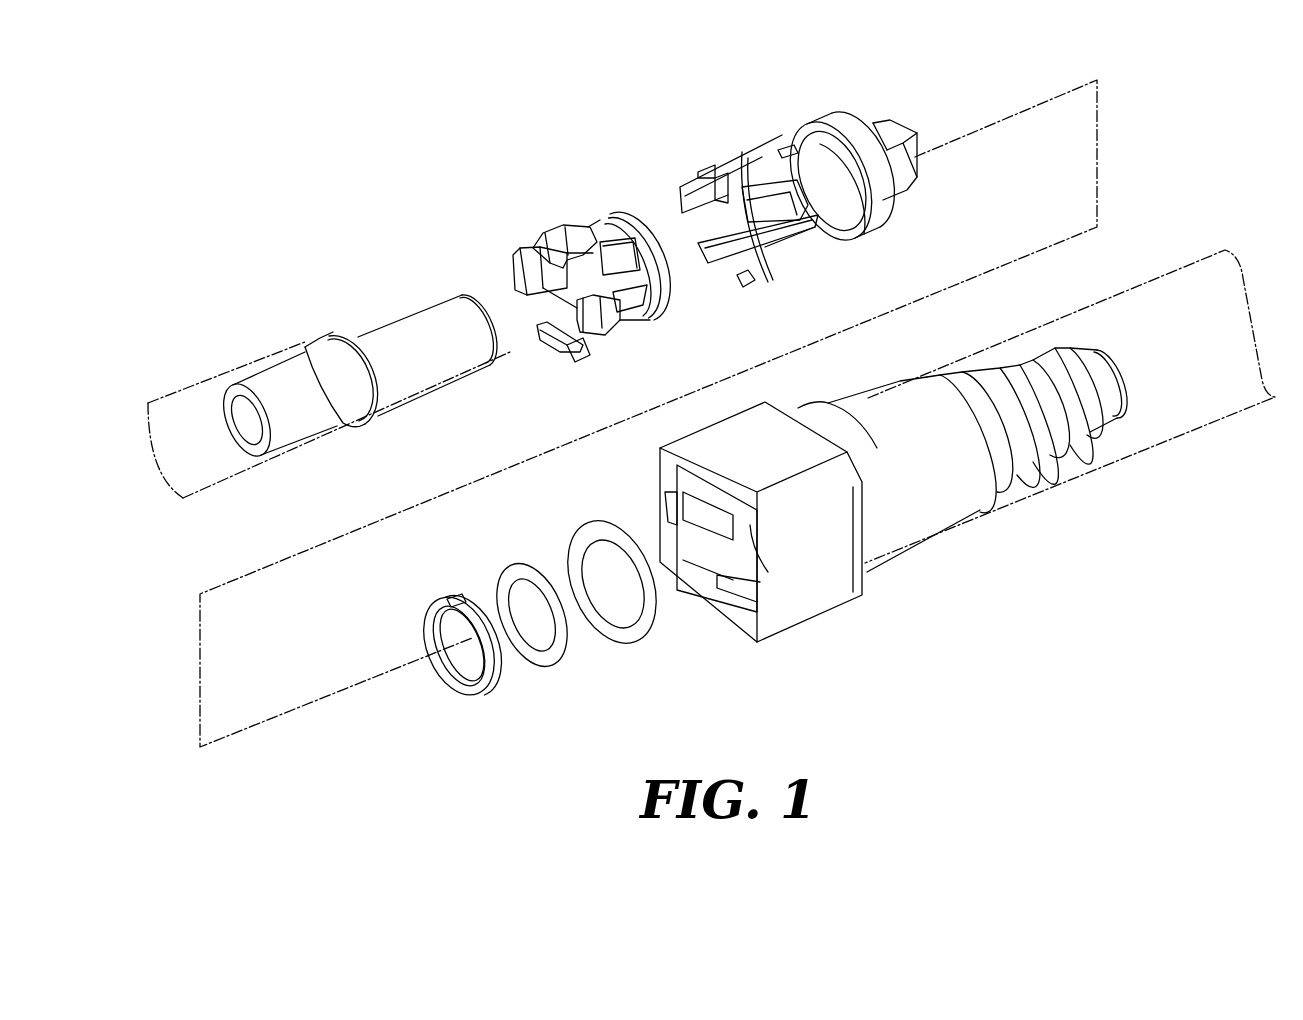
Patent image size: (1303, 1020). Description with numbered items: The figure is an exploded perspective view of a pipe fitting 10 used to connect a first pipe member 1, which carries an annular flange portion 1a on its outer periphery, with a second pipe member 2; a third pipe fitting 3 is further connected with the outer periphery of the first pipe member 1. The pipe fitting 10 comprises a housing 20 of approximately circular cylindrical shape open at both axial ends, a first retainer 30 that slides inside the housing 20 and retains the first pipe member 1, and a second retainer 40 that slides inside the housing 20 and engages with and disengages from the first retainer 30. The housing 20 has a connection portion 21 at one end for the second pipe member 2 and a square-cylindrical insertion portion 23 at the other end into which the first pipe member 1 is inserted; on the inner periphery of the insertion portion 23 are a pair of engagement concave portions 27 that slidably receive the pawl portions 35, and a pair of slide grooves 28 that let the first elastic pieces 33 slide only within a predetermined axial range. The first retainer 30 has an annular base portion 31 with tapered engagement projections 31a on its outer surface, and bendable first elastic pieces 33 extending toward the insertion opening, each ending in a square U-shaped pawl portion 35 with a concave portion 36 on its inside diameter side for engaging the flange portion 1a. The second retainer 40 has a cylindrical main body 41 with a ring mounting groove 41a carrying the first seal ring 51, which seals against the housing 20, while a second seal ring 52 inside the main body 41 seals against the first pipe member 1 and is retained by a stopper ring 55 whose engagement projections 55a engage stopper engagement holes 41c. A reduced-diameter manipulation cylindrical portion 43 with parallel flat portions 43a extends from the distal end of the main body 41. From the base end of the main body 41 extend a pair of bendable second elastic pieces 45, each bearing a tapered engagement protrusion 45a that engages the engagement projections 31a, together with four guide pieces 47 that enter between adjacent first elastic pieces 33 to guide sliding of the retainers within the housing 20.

The first pipe member 1 is at (405, 325).
The flange portion 1a is at (333, 337).
The second pipe member 2 is at (1222, 418).
The third pipe fitting 3 is at (200, 384).
The pipe fitting 10 is at (956, 572).
The housing 20 is at (866, 528).
The connection portion 21 is at (1063, 452).
The insertion portion 23 is at (712, 587).
The engagement concave portion 27 is at (740, 587).
The slide groove 28 is at (673, 512).
The first retainer 30 is at (605, 263).
The base portion 31 is at (642, 210).
The engagement projection 31a is at (667, 303).
The first elastic piece 33 is at (595, 232).
The pawl portion 35 is at (563, 223).
The concave portion 36 is at (538, 297).
The second retainer 40 is at (802, 174).
The main body 41 is at (862, 133).
The ring mounting groove 41a is at (835, 150).
The stopper engagement hole 41c is at (792, 148).
The manipulation cylindrical portion 43 is at (913, 153).
The flat portion 43a is at (893, 133).
The second elastic piece 45 is at (682, 186).
The engagement protrusion 45a is at (712, 170).
The guide piece 47 is at (733, 172).
The first seal ring 51 is at (625, 633).
The second seal ring 52 is at (538, 653).
The stopper ring 55 is at (443, 673).
The engagement projection 55a is at (457, 597).